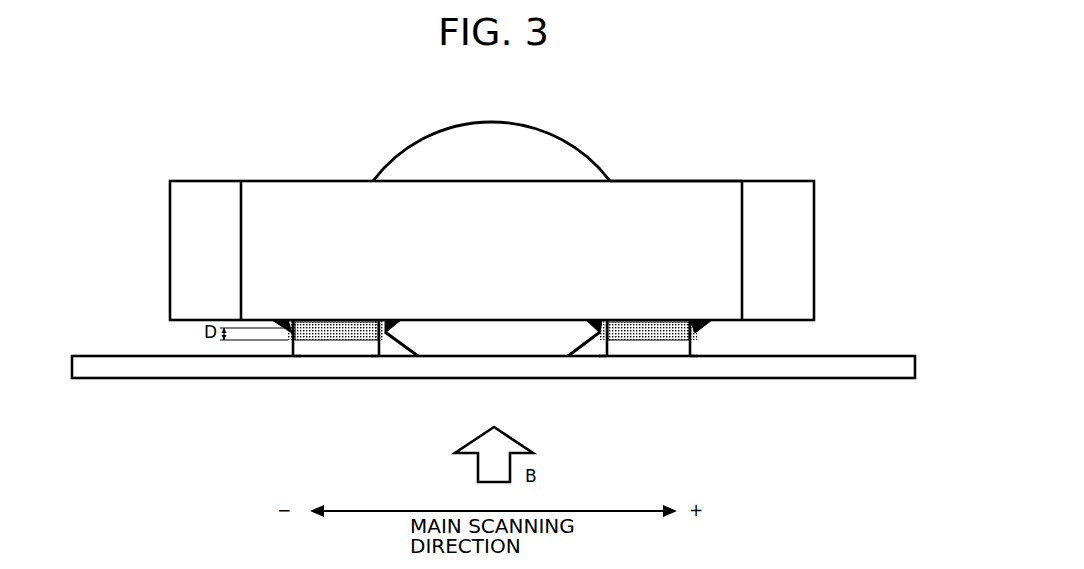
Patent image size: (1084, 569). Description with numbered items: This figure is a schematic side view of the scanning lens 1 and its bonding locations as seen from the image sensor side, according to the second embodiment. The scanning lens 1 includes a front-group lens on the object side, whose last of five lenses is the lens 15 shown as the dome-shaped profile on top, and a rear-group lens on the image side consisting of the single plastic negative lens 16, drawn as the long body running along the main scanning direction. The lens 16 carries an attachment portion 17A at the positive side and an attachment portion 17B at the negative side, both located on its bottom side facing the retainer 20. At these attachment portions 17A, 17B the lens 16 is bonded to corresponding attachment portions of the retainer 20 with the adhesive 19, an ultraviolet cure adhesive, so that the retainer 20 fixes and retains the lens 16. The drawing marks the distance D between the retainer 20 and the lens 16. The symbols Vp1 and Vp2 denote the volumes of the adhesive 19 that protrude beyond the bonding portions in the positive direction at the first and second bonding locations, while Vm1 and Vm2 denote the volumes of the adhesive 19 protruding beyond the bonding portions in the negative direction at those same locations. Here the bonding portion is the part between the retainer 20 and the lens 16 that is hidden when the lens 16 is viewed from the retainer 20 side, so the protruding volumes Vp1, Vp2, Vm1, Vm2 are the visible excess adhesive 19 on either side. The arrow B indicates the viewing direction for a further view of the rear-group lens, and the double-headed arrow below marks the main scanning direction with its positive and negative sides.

The scanning lens 1 is at (760, 92).
The lens 15 is at (430, 135).
The lens 16 is at (688, 160).
The attachment portion 17A is at (650, 320).
The attachment portion 17B is at (337, 320).
The adhesive 19 is at (318, 341).
The retainer 20 is at (850, 356).
The volume of the adhesive protruding in the negative direction Vm1 is at (606, 334).
The volume of the adhesive protruding in the positive direction Vp1 is at (691, 334).
The volume of the adhesive protruding in the negative direction Vm2 is at (292, 334).
The volume of the adhesive protruding in the positive direction Vp2 is at (379, 334).